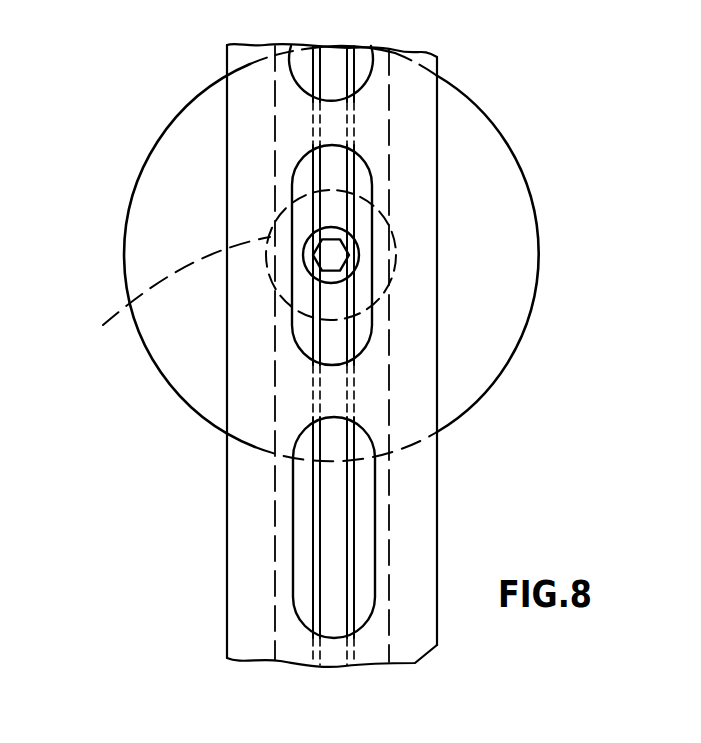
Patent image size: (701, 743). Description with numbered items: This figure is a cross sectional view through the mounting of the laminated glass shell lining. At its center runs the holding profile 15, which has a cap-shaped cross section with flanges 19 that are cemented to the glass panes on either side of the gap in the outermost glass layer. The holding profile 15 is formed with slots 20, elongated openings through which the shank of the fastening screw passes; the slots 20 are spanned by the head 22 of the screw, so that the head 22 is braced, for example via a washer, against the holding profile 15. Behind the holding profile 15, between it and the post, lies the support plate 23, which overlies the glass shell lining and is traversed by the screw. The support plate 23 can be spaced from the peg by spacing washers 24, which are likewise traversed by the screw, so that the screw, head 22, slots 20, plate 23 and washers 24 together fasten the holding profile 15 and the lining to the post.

The holding profile 15 is at (387, 356).
The flanges 19 is at (241, 147).
The slots 20 is at (331, 306).
The head 22 is at (335, 268).
The support plate 23 is at (128, 207).
The spacing washers 24 is at (226, 279).